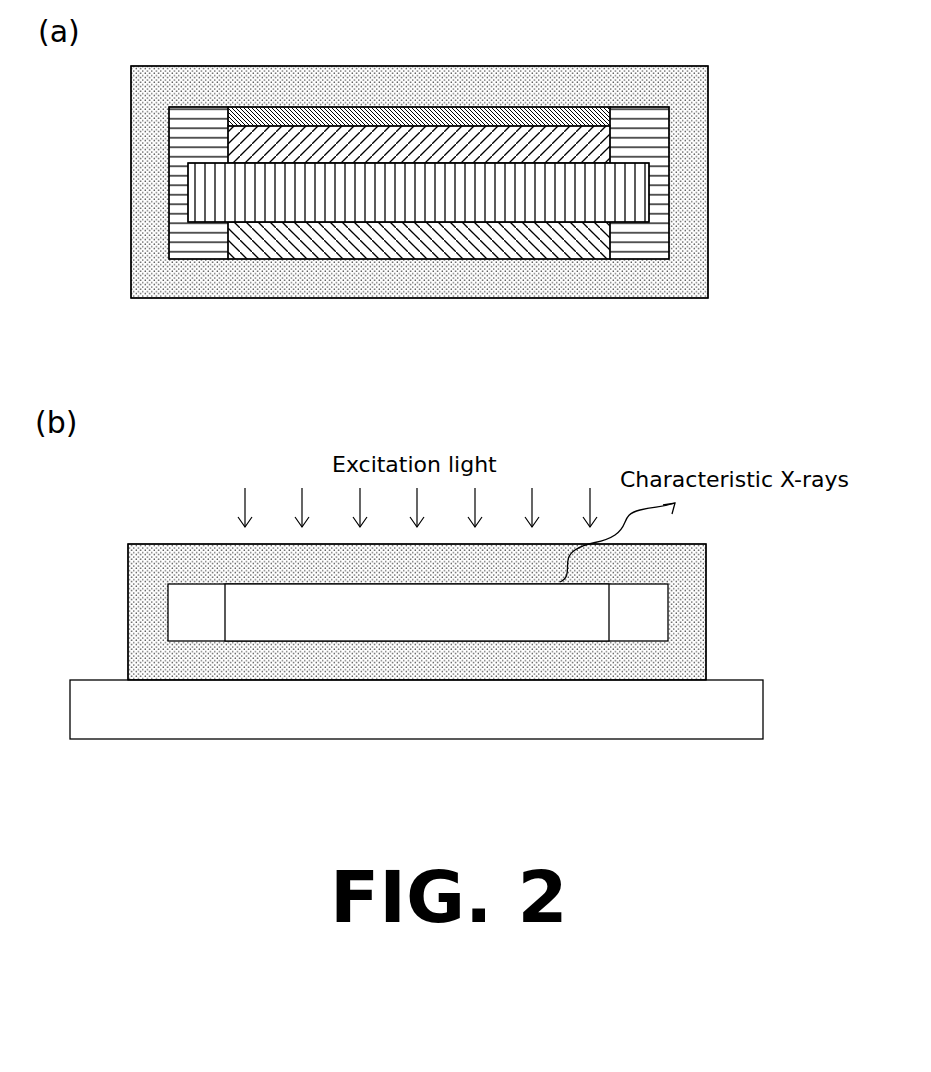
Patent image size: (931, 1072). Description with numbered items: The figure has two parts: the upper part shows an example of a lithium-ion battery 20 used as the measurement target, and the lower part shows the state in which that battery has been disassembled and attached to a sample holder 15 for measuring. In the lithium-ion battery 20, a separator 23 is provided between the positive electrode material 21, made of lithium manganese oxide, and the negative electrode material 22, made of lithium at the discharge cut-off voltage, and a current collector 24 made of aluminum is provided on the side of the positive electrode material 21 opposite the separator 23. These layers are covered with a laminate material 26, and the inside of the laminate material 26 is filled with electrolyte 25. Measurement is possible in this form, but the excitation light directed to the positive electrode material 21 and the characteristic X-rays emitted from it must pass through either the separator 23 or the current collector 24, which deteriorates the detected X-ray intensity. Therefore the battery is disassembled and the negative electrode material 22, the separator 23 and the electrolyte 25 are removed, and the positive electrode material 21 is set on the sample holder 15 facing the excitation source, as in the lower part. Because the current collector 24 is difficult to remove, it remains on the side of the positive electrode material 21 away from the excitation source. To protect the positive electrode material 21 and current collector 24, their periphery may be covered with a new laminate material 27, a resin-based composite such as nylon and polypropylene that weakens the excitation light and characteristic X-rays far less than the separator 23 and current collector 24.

The sample holder 15 is at (742, 708).
The lithium-ion battery 20 is at (122, 300).
The positive electrode material 21 is at (600, 143).
The negative electrode material 22 is at (595, 242).
The separator 23 is at (592, 203).
The current collector 24 is at (595, 115).
The electrolyte 25 is at (617, 245).
The laminate material 26 is at (592, 285).
The laminate material 27 is at (680, 637).